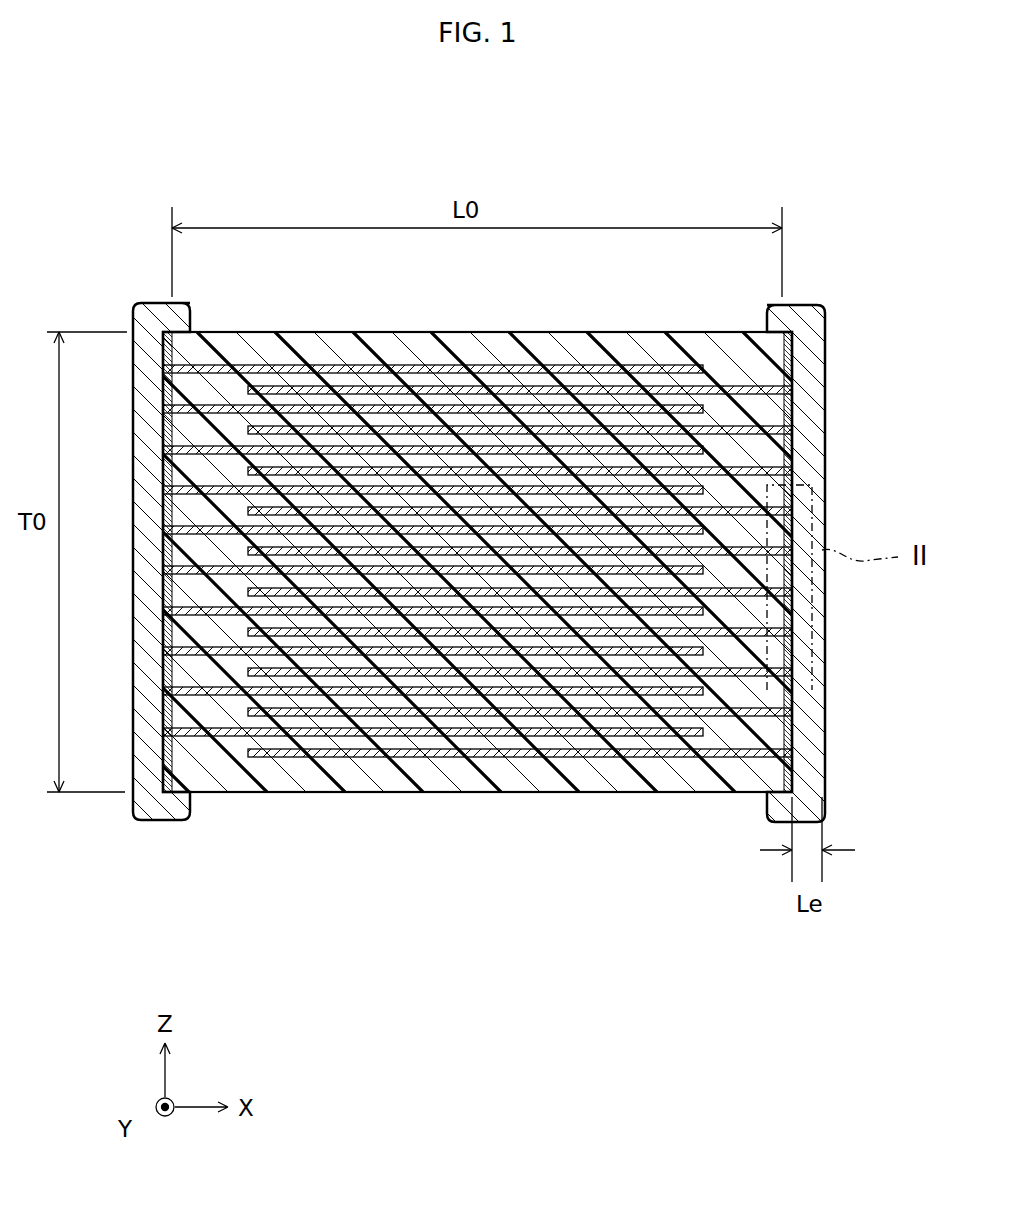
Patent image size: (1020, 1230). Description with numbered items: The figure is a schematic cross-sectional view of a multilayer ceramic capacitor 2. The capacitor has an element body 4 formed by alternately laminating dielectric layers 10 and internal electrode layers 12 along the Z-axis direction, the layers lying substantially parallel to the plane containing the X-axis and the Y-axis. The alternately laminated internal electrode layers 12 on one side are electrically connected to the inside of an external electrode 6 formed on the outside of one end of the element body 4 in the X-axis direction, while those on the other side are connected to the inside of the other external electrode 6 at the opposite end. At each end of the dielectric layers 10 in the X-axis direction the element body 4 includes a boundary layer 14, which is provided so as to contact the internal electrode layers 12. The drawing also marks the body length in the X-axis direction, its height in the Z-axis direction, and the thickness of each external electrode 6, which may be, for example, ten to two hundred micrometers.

The multilayer ceramic capacitor 2 is at (510, 584).
The element body 4 is at (510, 573).
The external electrode 6 is at (793, 301).
The dielectric layer 10 is at (373, 364).
The internal electrode layer 12 is at (566, 364).
The boundary layer 14 is at (166, 393).